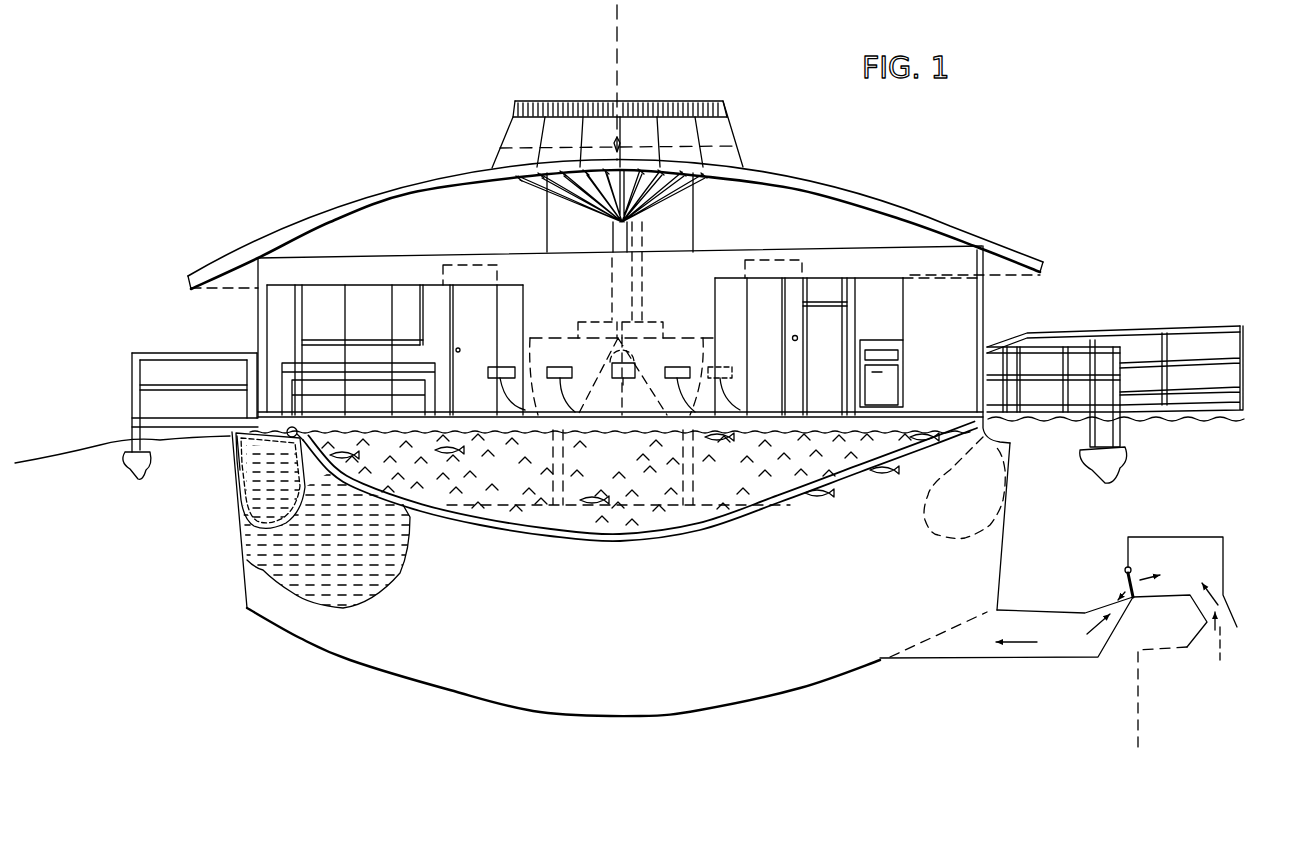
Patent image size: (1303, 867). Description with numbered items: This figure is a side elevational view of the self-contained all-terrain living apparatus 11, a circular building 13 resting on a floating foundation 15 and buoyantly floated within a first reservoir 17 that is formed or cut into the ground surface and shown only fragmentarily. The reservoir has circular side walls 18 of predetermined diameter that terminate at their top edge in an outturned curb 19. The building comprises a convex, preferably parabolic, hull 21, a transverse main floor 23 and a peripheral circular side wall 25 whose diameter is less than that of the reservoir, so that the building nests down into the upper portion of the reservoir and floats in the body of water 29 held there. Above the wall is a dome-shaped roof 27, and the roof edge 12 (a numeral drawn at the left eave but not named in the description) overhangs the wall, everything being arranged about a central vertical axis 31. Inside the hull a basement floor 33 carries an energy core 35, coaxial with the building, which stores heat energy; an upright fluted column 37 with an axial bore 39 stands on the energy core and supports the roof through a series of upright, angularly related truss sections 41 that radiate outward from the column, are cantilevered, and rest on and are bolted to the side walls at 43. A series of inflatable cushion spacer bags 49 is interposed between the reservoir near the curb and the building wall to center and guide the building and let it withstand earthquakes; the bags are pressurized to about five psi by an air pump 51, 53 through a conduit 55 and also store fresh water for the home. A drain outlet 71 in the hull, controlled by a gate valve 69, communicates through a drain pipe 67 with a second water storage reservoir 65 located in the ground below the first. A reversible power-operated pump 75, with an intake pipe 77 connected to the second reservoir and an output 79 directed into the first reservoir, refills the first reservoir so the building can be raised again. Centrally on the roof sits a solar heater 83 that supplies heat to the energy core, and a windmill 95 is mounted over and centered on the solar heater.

The self-contained all-terrain living apparatus 11 is at (408, 182).
The roof eave 12 is at (222, 263).
The circular building 13 is at (257, 329).
The floating foundation 15 is at (372, 513).
The first reservoir 17 is at (247, 609).
The side walls 18 is at (233, 519).
The outturned curb 19 is at (226, 437).
The convex hull 21 is at (538, 541).
The transverse main floor 23 is at (517, 435).
The peripheral circular side wall 25 is at (986, 304).
The dome-shaped roof 27 is at (333, 213).
The body of water 29 is at (513, 674).
The central vertical axis 31 is at (618, 36).
The basement floor 33 is at (746, 506).
The energy core 35 is at (690, 471).
The upright fluted column 37 is at (608, 284).
The axial bore 39 is at (613, 240).
The truss sections 41 is at (682, 201).
The bolted connection 43 is at (978, 247).
The inflatable cushion spacer bags 49 is at (280, 515).
The air pump 51 is at (288, 429).
The air pump 53 is at (300, 437).
The conduit 55 is at (252, 449).
The second water storage reservoir 65 is at (1138, 709).
The drain pipe 67 is at (1086, 613).
The gate valve 69 is at (1125, 572).
The drain outlet 71 is at (933, 642).
The power-operated pump 75 is at (1163, 553).
The intake pipe 77 is at (1204, 607).
The output 79 is at (1020, 645).
The solar heater 83 is at (720, 126).
The windmill 95 is at (670, 106).